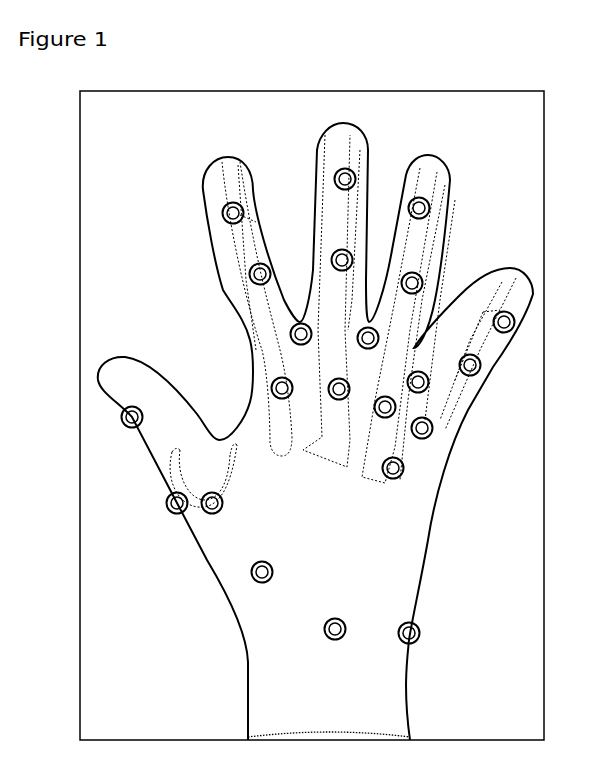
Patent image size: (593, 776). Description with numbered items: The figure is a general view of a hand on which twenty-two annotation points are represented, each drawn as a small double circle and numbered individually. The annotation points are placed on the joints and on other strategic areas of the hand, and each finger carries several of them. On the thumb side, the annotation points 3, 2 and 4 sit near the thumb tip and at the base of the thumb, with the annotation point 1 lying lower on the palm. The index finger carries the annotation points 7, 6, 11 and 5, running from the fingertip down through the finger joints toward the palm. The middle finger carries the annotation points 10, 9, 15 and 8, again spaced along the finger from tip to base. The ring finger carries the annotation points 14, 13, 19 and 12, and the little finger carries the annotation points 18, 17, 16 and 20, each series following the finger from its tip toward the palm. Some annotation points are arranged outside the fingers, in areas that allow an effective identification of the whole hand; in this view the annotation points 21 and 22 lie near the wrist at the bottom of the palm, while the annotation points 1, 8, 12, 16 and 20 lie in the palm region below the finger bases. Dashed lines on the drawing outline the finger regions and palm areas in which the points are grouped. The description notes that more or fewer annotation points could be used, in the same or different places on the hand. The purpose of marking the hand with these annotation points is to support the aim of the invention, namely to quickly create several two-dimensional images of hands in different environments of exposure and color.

The annotation point 1 is at (254, 587).
The annotation point 2 is at (165, 517).
The annotation point 3 is at (121, 436).
The annotation point 4 is at (223, 507).
The annotation point 5 is at (273, 402).
The annotation point 6 is at (250, 277).
The annotation point 7 is at (223, 219).
The annotation point 8 is at (331, 403).
The annotation point 9 is at (334, 274).
The annotation point 10 is at (329, 195).
The annotation point 11 is at (286, 347).
The annotation point 12 is at (369, 424).
The annotation point 13 is at (427, 270).
The annotation point 14 is at (436, 197).
The annotation point 15 is at (354, 349).
The annotation point 16 is at (443, 442).
The annotation point 17 is at (487, 383).
The annotation point 18 is at (519, 340).
The annotation point 19 is at (412, 364).
The annotation point 20 is at (403, 489).
The annotation point 21 is at (335, 650).
The annotation point 22 is at (422, 652).